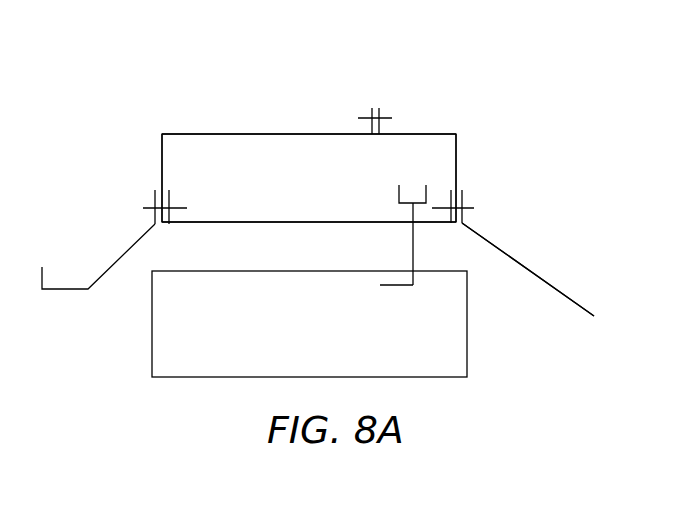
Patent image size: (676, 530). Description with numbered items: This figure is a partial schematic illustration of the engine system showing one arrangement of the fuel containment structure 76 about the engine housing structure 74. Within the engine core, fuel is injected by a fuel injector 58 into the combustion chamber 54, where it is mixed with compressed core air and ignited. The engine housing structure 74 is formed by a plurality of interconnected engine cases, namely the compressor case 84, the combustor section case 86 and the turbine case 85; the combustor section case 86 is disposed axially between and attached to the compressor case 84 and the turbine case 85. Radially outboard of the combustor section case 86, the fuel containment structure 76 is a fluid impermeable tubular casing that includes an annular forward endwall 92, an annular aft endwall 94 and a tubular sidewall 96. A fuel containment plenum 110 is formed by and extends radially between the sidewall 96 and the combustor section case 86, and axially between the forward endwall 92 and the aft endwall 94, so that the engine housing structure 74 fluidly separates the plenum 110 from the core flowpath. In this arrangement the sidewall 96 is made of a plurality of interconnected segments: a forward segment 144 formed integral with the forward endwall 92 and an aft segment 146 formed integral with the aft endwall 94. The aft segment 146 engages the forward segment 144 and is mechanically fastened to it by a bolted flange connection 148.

The combustion chamber 54 is at (322, 365).
The fuel injector 58 is at (413, 257).
The engine housing structure 74 is at (536, 256).
The fuel containment structure 76 is at (303, 114).
The compressor case 84 is at (122, 253).
The turbine case 85 is at (553, 283).
The combustor section case 86 is at (197, 222).
The forward endwall 92 is at (162, 148).
The aft endwall 94 is at (457, 162).
The sidewall 96 is at (325, 126).
The fuel containment plenum 110 is at (328, 195).
The forward segment 144 is at (213, 133).
The aft segment 146 is at (437, 133).
The bolted flange connection 148 is at (379, 104).